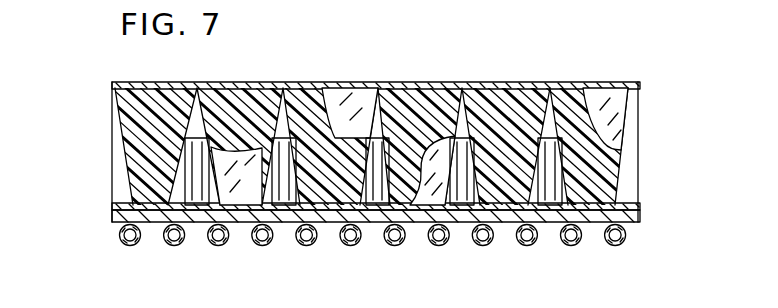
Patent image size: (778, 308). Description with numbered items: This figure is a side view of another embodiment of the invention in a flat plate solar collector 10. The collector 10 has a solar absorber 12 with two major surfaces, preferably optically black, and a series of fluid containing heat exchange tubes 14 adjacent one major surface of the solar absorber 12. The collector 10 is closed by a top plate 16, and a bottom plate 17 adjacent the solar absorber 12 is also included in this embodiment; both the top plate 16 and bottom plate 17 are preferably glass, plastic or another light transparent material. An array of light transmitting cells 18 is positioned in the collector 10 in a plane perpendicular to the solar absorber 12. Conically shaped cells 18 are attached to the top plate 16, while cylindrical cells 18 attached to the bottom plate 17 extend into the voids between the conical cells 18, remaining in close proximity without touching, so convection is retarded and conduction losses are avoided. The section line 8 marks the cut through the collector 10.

The flat plate solar collector 10 is at (367, 159).
The solar absorber 12 is at (113, 217).
The heat exchange tubes 14 is at (345, 245).
The top plate 16 is at (153, 82).
The bottom plate 17 is at (632, 204).
The light transmitting cells 18 is at (311, 96).
The section line 8- 8 is at (41, 172).